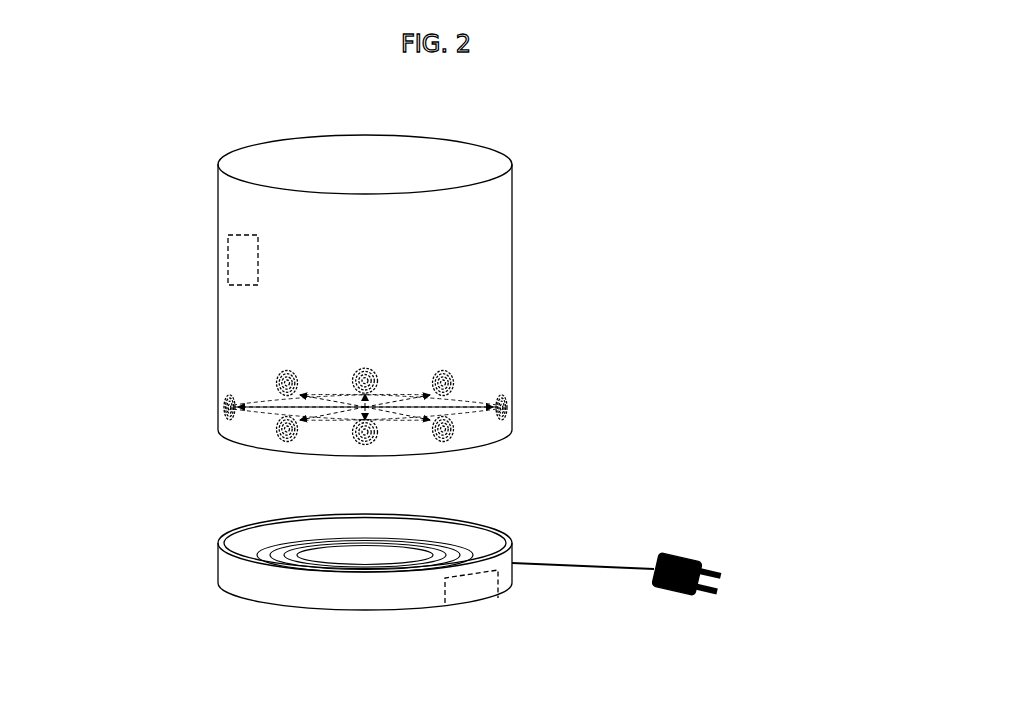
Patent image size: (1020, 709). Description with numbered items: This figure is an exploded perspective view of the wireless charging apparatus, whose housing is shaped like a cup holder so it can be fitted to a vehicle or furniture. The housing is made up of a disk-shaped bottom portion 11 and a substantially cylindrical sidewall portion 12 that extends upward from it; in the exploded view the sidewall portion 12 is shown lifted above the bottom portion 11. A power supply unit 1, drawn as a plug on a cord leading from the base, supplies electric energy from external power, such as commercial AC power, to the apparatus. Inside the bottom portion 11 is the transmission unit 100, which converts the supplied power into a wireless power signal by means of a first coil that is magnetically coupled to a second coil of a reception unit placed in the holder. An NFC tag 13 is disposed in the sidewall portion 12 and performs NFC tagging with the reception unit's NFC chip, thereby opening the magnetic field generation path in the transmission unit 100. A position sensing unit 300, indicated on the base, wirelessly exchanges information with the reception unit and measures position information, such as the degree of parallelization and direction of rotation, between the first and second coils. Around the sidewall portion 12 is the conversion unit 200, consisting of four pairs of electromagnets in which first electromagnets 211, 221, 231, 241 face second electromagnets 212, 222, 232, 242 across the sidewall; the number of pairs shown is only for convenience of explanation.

The power supply unit 1 is at (680, 553).
The bottom portion 11 is at (230, 567).
The sidewall portion 12 is at (236, 319).
The near field communication (NFC) tag 13 is at (228, 258).
The transmission unit 100 is at (312, 560).
The conversion unit 200 is at (203, 367).
The first electromagnet 211 is at (365, 367).
The second electromagnet 212 is at (365, 445).
The first electromagnet 221 is at (443, 370).
The second electromagnet 222 is at (287, 442).
The first electromagnet 231 is at (287, 370).
The second electromagnet 232 is at (443, 442).
The first electromagnet 241 is at (499, 394).
The second electromagnet 242 is at (232, 394).
The position sensing unit 300 is at (478, 593).